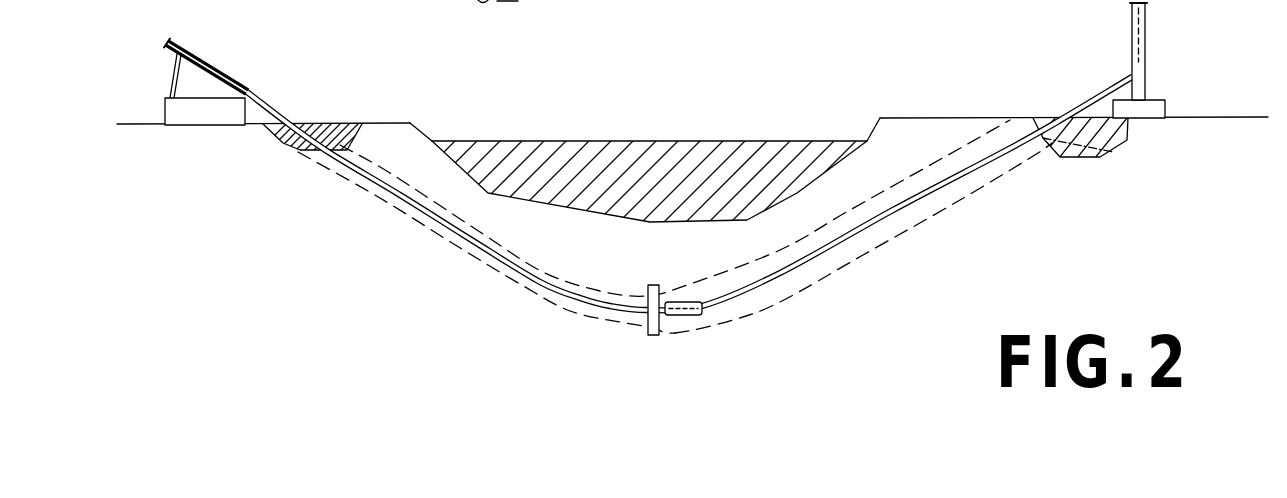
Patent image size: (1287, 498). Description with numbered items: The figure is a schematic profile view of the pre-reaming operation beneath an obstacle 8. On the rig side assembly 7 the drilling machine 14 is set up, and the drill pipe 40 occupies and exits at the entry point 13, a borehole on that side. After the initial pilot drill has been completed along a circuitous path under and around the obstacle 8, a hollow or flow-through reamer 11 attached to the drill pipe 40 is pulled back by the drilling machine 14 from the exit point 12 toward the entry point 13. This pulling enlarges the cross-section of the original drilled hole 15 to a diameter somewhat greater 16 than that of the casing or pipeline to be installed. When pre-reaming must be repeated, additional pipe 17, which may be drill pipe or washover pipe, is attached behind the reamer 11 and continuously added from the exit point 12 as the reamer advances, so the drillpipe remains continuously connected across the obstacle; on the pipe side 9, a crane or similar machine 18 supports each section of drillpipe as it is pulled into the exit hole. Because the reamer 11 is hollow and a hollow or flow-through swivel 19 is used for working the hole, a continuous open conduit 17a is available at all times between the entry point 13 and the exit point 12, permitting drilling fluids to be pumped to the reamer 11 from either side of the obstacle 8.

The rig side assembly 7 is at (227, 49).
The obstacle 8 is at (627, 155).
The pipe side 9 is at (1087, 50).
The reamer 11 is at (650, 285).
The exit point 12 is at (1050, 117).
The entry point 13 is at (288, 123).
The drilling machine 14 is at (213, 112).
The original drilled hole 15 is at (412, 218).
The enlarged diameter 16 is at (860, 255).
The additional pipe 17 is at (967, 173).
The continuous open conduit 17a is at (895, 208).
The crane 18 is at (1150, 110).
The hollow swivel 19 is at (685, 315).
The drill pipe 40 is at (367, 176).